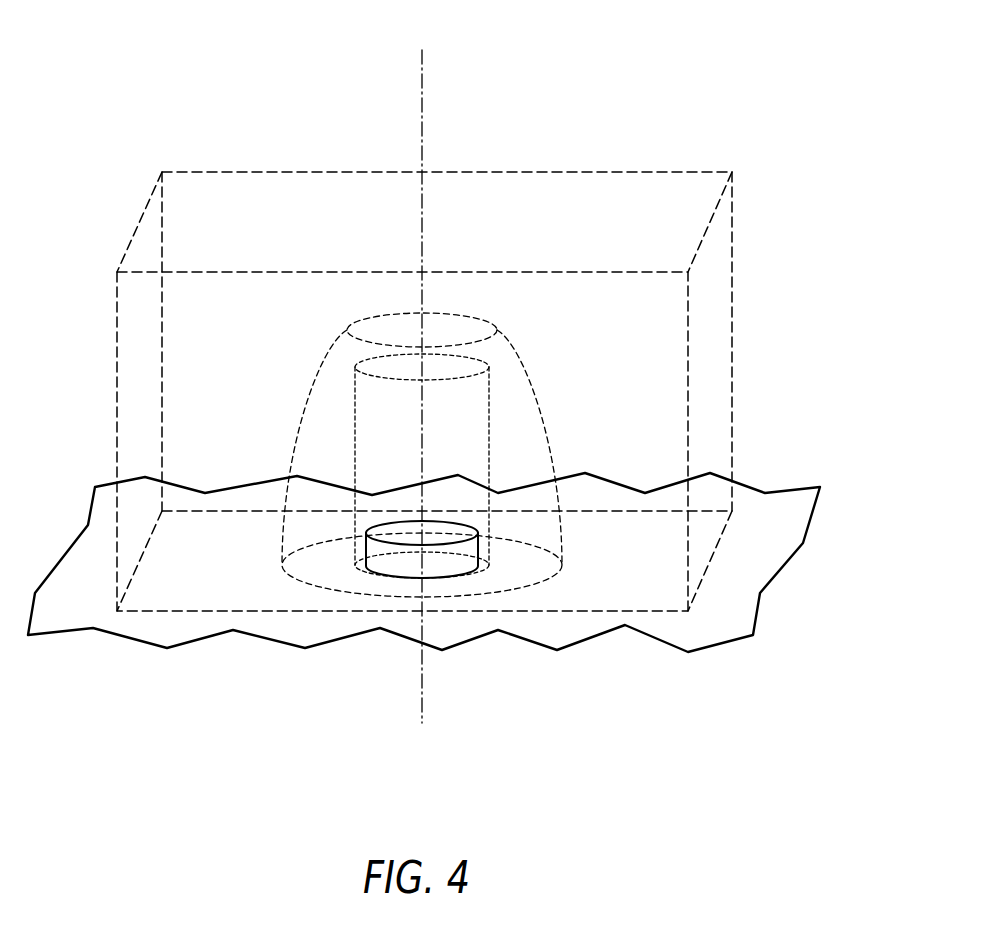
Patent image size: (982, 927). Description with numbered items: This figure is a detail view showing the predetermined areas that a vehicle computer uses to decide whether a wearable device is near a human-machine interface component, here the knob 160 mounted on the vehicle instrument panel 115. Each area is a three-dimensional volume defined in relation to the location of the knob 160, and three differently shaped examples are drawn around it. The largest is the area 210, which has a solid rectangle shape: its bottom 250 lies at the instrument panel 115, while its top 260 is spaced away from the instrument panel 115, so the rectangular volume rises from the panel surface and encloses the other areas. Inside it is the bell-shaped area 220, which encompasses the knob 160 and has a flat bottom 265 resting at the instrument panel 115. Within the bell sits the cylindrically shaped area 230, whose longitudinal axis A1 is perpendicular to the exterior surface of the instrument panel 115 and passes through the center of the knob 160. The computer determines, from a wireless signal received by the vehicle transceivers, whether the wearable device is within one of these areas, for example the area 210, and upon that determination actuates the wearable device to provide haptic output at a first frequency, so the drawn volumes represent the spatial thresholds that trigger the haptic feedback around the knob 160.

The longitudinal axis A1 is at (419, 370).
The instrument panel 115 is at (762, 513).
The knob 160 is at (450, 555).
The area 210 is at (742, 214).
The area 220 is at (523, 368).
The area 230 is at (352, 408).
The bottom 250 is at (117, 611).
The top 260 is at (208, 170).
The flat bottom 265 is at (333, 565).